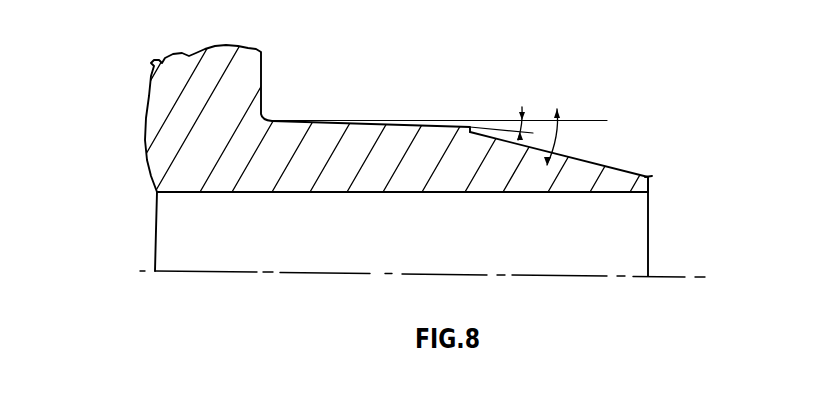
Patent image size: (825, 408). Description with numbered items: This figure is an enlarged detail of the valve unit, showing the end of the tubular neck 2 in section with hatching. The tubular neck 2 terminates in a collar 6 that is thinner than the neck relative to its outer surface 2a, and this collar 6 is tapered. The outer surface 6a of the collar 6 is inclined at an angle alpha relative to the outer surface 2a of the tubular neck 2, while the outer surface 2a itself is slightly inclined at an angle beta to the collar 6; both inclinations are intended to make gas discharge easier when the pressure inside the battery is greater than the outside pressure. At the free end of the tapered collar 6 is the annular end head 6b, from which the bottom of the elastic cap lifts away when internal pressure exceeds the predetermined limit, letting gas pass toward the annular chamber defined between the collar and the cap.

The tubular neck 2 is at (385, 153).
The outer surface of the tubular neck 2a is at (290, 188).
The collar 6 is at (704, 126).
The outer surface of the collar 6a is at (590, 160).
The annular end head 6b is at (652, 188).